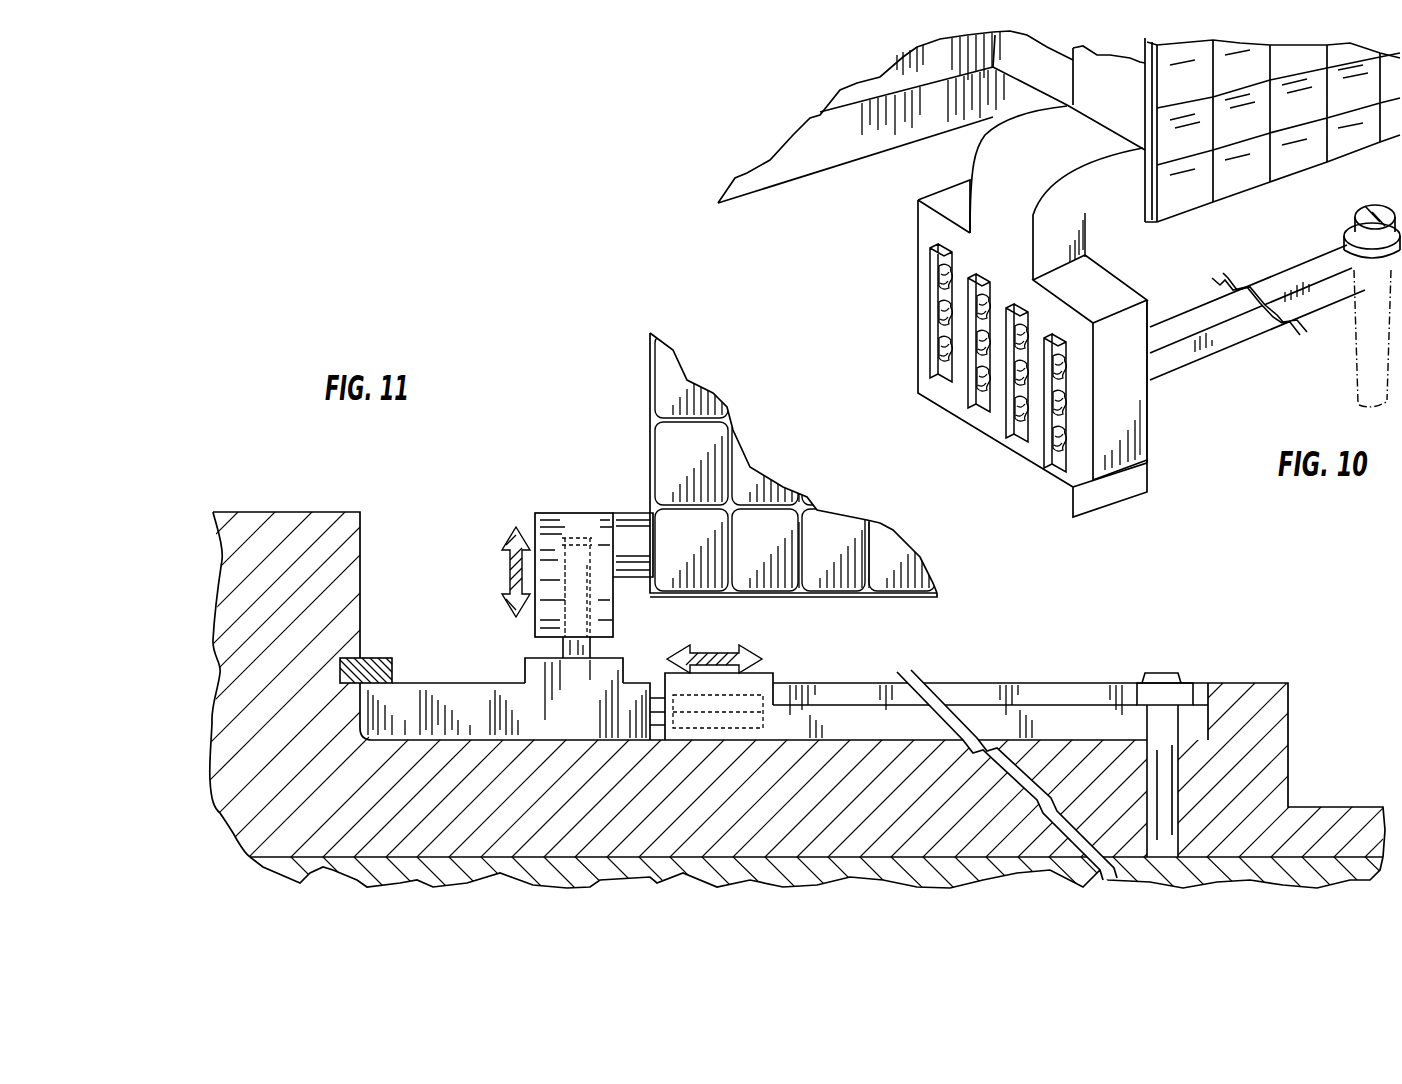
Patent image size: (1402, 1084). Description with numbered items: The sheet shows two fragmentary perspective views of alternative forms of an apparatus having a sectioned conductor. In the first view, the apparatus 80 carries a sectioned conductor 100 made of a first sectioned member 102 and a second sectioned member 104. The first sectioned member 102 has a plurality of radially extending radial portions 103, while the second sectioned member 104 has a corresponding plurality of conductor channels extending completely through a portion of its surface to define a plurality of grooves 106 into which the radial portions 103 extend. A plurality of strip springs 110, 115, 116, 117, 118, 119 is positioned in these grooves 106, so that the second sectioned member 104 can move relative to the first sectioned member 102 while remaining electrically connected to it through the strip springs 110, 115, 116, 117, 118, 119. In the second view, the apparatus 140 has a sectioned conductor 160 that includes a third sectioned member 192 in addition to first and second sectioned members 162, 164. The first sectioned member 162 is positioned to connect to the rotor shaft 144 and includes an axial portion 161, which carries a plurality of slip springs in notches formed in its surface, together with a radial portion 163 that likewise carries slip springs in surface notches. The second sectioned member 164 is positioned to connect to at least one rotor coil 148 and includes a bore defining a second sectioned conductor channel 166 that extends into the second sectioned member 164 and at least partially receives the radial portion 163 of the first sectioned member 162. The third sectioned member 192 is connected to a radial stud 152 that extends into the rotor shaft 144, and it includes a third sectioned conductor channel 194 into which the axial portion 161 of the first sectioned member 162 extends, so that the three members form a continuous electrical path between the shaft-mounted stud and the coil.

In FIG. 10, the apparatus 80 is at (860, 283).
In FIG. 10, the sectioned conductor 100 is at (1179, 315).
In FIG. 10, the first sectioned member 102 is at (1110, 487).
In FIG. 10, the radial portions 103 is at (933, 327).
In FIG. 10, the second sectioned member 104 is at (1137, 410).
In FIG. 10, the grooves 106 is at (940, 276).
In FIG. 10, the strip spring 110 is at (1067, 480).
In FIG. 10, the strip spring 115 is at (1053, 427).
In FIG. 10, the strip spring 116 is at (1068, 422).
In FIG. 10, the strip spring 117 is at (1050, 420).
In FIG. 10, the strip spring 118 is at (1060, 380).
In FIG. 10, the strip spring 119 is at (1030, 357).
In FIG. 11, the apparatus 140 is at (456, 510).
In FIG. 11, the rotor shaft 144 is at (360, 603).
In FIG. 11, the rotor coil 148 is at (657, 530).
In FIG. 11, the radial stud 152 is at (1180, 757).
In FIG. 11, the sectioned conductor 160 is at (657, 660).
In FIG. 11, the axial portion 161 is at (750, 712).
In FIG. 11, the first sectioned member 162 is at (400, 677).
In FIG. 11, the radial portion 163 is at (570, 543).
In FIG. 11, the second sectioned member 164 is at (530, 623).
In FIG. 11, the second sectioned conductor channel 166 is at (592, 547).
In FIG. 11, the third sectioned member 192 is at (772, 675).
In FIG. 11, the third sectioned conductor channel 194 is at (722, 732).